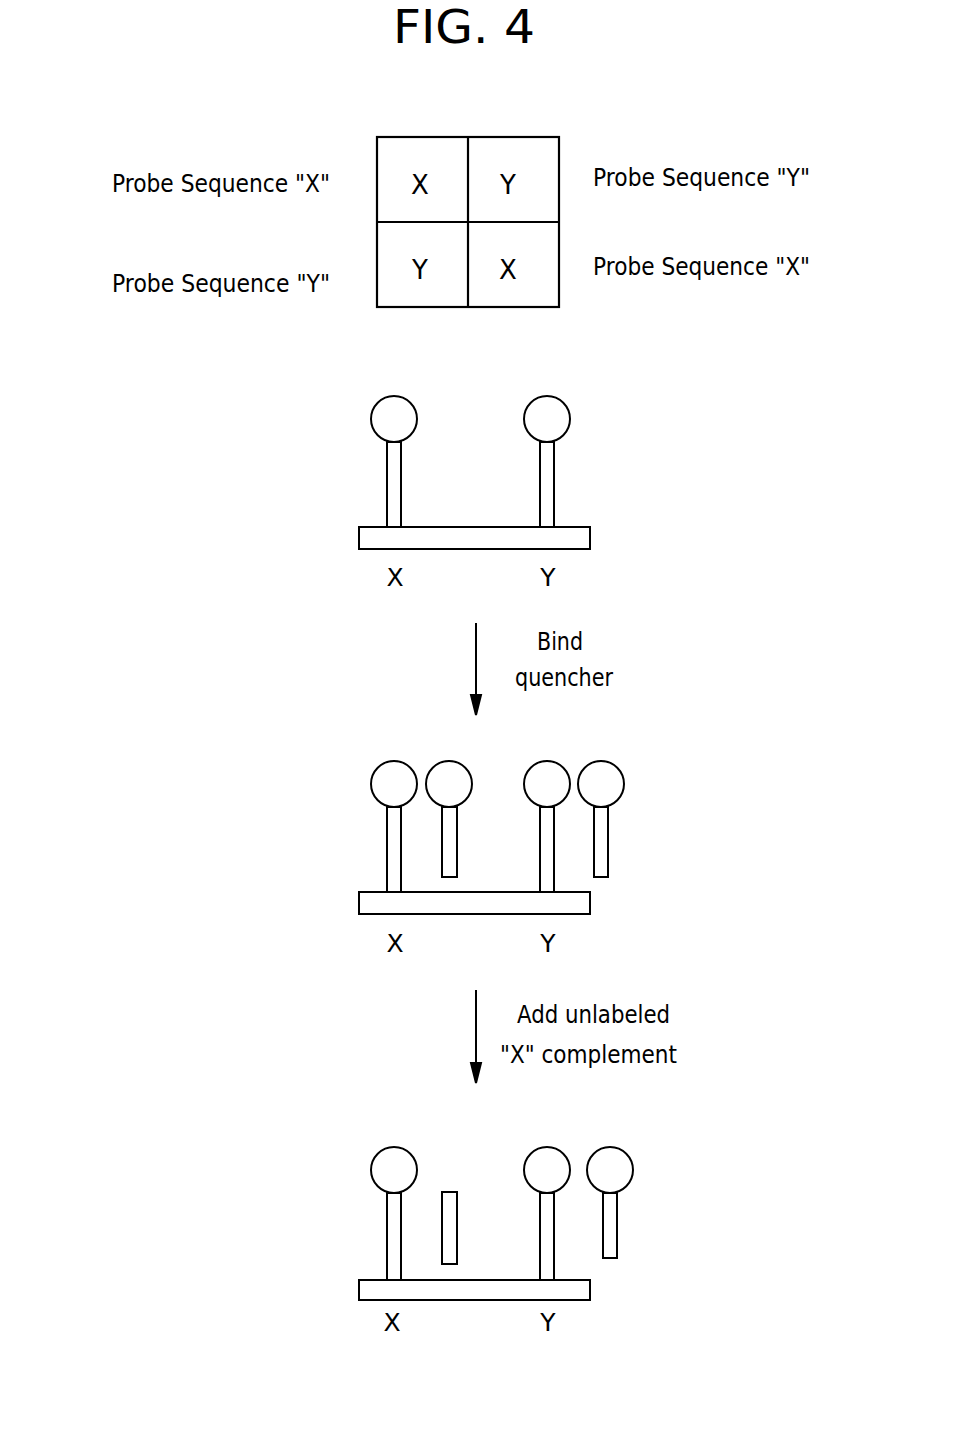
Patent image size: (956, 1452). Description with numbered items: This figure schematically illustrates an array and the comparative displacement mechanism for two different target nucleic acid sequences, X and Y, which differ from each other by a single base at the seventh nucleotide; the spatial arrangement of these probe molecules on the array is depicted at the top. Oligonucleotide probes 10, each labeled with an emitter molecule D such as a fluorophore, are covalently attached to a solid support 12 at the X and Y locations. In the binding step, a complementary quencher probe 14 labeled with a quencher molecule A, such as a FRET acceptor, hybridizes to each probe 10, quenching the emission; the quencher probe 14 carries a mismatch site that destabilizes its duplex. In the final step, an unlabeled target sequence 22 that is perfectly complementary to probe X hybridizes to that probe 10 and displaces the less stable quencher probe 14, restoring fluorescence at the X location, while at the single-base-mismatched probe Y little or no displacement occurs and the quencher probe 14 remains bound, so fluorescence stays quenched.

The oligonucleotide probe 10 is at (387, 487).
The solid support 12 is at (590, 535).
The quencher probe 14 is at (457, 843).
The unlabeled target sequence 22 is at (457, 1200).